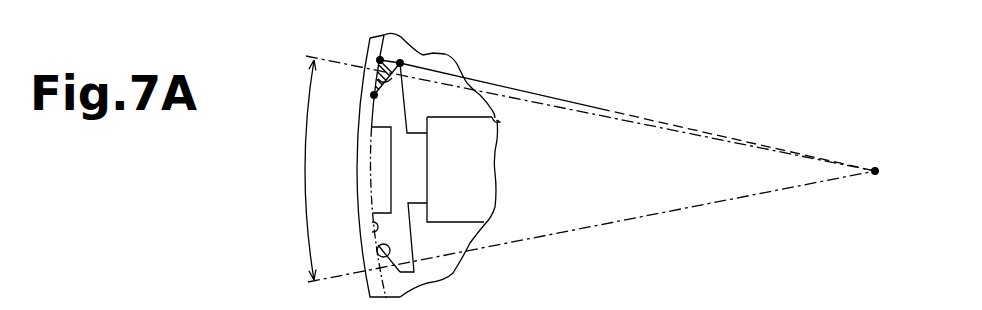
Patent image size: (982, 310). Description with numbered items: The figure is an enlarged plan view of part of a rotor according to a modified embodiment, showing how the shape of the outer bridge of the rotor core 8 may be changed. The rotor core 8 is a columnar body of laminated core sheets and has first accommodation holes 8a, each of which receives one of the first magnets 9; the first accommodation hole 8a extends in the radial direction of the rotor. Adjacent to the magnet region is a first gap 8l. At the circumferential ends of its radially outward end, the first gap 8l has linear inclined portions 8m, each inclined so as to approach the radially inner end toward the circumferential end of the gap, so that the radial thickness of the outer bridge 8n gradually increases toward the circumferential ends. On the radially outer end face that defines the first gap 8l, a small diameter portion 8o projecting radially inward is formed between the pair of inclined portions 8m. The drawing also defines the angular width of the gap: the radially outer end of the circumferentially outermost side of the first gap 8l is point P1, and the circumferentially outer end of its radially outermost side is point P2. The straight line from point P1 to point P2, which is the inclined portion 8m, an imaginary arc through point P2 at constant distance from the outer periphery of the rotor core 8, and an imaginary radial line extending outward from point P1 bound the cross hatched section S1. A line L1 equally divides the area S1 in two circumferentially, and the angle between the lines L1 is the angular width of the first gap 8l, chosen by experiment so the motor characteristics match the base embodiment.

The rotor core 8 is at (367, 289).
The first accommodation hole 8a is at (498, 121).
The first gap 8l is at (372, 222).
The inclined portion 8m is at (377, 81).
The outer bridge 8n is at (360, 128).
The small diameter portion 8o is at (391, 190).
The first magnet 9 is at (494, 155).
The cross hatched section S1 is at (382, 58).
The point P1 is at (403, 61).
The point P2 is at (373, 95).
The light source point L is at (873, 157).
The line L1 is at (537, 97).